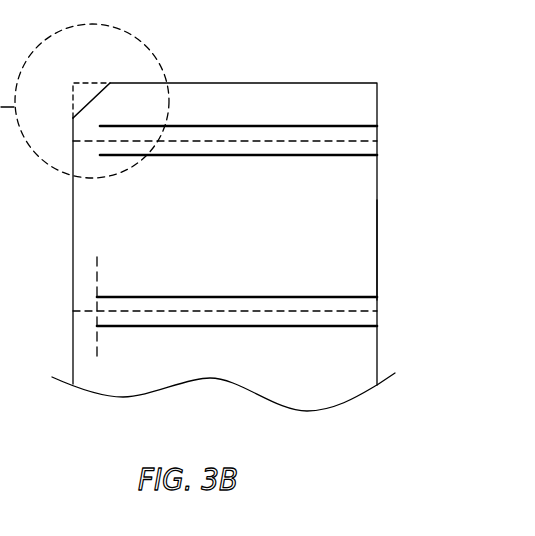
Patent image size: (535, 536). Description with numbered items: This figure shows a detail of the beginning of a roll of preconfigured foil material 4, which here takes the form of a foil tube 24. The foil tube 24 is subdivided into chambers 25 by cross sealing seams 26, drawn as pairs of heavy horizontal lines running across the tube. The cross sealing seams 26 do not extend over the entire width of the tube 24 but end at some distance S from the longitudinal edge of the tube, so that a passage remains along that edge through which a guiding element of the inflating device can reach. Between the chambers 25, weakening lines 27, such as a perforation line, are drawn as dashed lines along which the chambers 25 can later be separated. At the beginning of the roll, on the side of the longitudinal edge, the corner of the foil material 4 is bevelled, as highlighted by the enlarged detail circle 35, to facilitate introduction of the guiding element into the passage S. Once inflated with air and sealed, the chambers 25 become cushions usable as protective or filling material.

The chamber 25 is at (237, 237).
The foil material 4 is at (400, 250).
The foil tube 24 is at (355, 259).
The cross sealing seam 26 is at (288, 125).
The weakening line 27 is at (310, 141).
The chamfered corner 35 is at (93, 98).
The distance S is at (97, 248).